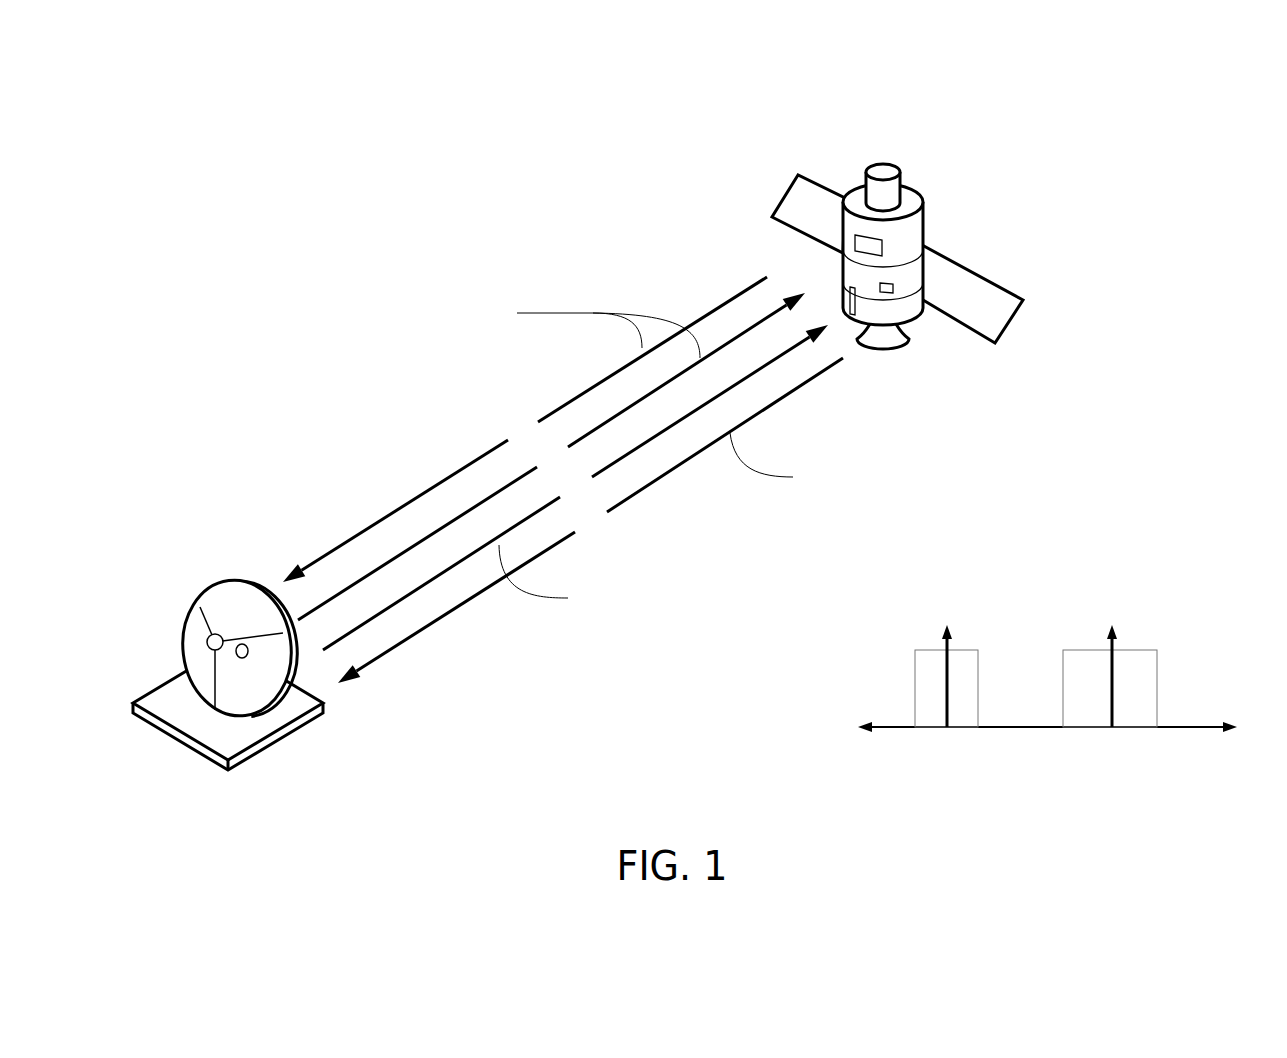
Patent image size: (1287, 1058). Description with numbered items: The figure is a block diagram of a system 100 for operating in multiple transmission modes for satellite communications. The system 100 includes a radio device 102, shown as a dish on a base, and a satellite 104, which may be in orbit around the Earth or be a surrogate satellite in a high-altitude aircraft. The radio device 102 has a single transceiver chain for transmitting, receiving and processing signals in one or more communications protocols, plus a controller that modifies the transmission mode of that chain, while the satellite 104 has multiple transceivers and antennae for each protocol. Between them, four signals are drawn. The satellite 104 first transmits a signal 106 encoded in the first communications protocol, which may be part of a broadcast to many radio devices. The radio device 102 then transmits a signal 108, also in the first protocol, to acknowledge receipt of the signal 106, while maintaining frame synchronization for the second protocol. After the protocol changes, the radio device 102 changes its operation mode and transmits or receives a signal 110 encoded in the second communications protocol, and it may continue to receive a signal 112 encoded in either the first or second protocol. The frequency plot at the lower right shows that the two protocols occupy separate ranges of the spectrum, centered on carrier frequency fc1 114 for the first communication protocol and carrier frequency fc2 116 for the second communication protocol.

The system 100 is at (670, 449).
The radio device 102 is at (235, 580).
The satellite 104 is at (922, 203).
The signal 106 is at (525, 429).
The signal 108 is at (551, 456).
The signal 110 is at (575, 487).
The signal 112 is at (590, 520).
The carrier frequency fc1 114 is at (947, 622).
The carrier frequency fc2 116 is at (1112, 622).